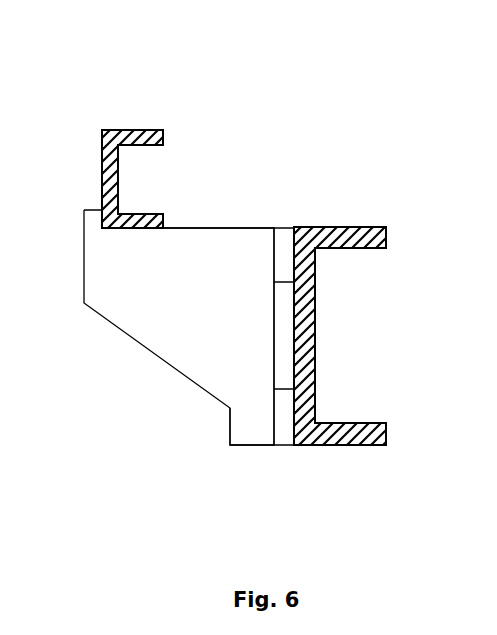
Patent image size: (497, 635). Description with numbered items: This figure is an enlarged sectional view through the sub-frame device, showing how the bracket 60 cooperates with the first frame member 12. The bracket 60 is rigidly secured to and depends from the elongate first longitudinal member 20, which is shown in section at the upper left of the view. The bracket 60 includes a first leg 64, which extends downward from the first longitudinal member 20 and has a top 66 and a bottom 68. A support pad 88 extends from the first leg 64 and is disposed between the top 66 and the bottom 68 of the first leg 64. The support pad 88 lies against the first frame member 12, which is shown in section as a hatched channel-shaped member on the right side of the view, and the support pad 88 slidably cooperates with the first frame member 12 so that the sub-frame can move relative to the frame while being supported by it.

The first frame member 12 is at (358, 232).
The first longitudinal member 20 is at (107, 163).
The bracket 60 is at (96, 358).
The first leg 64 is at (211, 356).
The top 66 is at (229, 240).
The bottom 68 is at (249, 430).
The support pad 88 is at (287, 268).